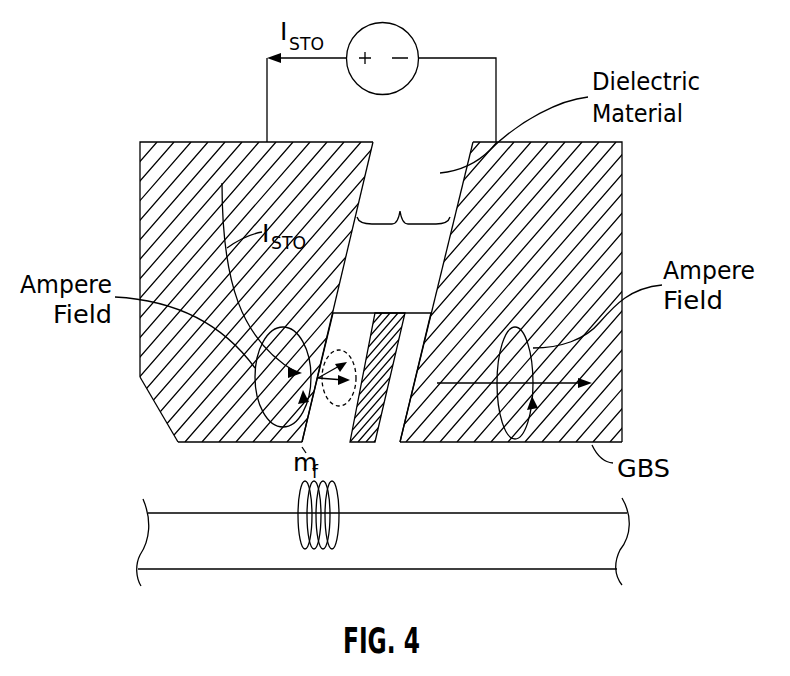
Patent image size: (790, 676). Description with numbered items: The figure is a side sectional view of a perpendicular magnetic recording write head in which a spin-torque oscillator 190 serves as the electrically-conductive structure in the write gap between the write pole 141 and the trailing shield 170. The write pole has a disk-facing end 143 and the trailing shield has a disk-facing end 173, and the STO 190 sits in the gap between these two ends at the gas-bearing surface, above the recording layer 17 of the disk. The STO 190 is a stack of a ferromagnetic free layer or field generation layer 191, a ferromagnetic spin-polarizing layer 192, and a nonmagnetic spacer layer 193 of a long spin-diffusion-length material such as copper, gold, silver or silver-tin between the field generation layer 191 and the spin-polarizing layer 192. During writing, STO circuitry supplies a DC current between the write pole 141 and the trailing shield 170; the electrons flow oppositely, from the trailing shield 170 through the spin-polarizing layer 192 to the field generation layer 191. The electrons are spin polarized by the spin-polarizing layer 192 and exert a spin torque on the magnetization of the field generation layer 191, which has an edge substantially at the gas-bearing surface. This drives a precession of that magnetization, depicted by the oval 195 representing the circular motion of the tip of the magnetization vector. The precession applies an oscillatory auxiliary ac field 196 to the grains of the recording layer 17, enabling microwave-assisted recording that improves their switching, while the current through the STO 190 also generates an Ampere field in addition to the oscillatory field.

The recording layer 17 is at (162, 542).
The write pole 141 is at (157, 355).
The disk-facing end of write pole 143 is at (203, 445).
The trailing shield 170 is at (608, 395).
The disk-facing end of trailing shield 173 is at (500, 437).
The spin-torque oscillator 190 is at (387, 292).
The field generation layer 191 is at (350, 322).
The spin-polarizing layer 192 is at (388, 415).
The nonmagnetic spacer layer 193 is at (392, 316).
The oval 195 is at (333, 413).
The oscillatory auxiliary ac field 196 is at (340, 528).